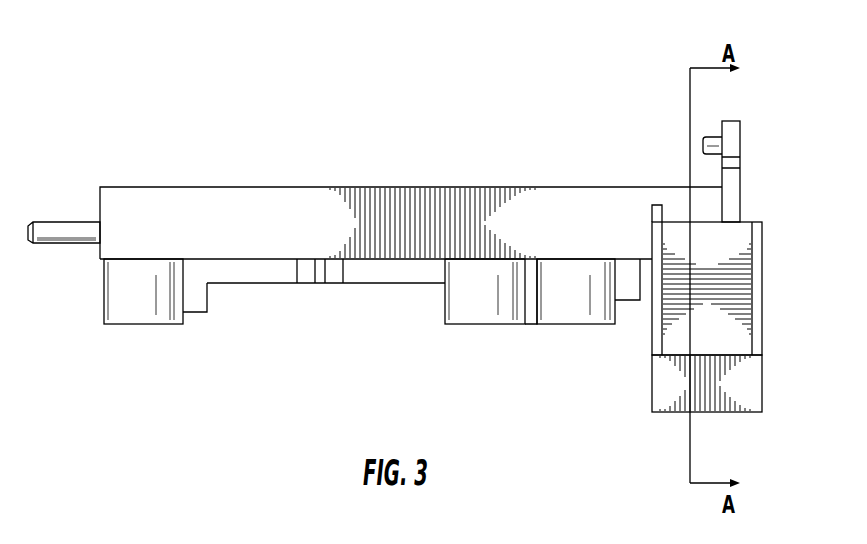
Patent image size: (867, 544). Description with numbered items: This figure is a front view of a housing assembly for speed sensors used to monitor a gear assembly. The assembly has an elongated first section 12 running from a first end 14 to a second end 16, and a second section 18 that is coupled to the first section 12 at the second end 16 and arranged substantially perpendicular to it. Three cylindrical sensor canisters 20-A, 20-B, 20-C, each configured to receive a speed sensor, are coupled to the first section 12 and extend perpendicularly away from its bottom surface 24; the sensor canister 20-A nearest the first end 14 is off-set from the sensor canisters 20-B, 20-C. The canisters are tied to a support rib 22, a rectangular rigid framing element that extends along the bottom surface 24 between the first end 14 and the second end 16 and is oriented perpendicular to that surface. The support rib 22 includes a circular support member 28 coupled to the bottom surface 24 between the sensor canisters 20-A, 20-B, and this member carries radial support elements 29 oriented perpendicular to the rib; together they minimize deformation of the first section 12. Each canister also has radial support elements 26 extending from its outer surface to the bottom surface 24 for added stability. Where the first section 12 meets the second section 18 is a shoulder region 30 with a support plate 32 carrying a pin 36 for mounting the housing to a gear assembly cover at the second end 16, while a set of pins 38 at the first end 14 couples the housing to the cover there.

The first section 12 is at (305, 152).
The first end 14 is at (402, 176).
The second end 16 is at (721, 118).
The second section 18 is at (774, 304).
The sensor canister 20-A is at (133, 321).
The sensor canister 20-B is at (473, 322).
The sensor canister 20-C is at (565, 322).
The support rib 22 is at (383, 278).
The bottom surface 24 is at (257, 263).
The radial support elements 26 is at (193, 305).
The circular support member 28 is at (341, 283).
The radial support elements 29 is at (320, 283).
The shoulder region 30 is at (742, 213).
The support plate 32 is at (736, 128).
The pin 36 is at (716, 137).
The pins 38 is at (37, 231).